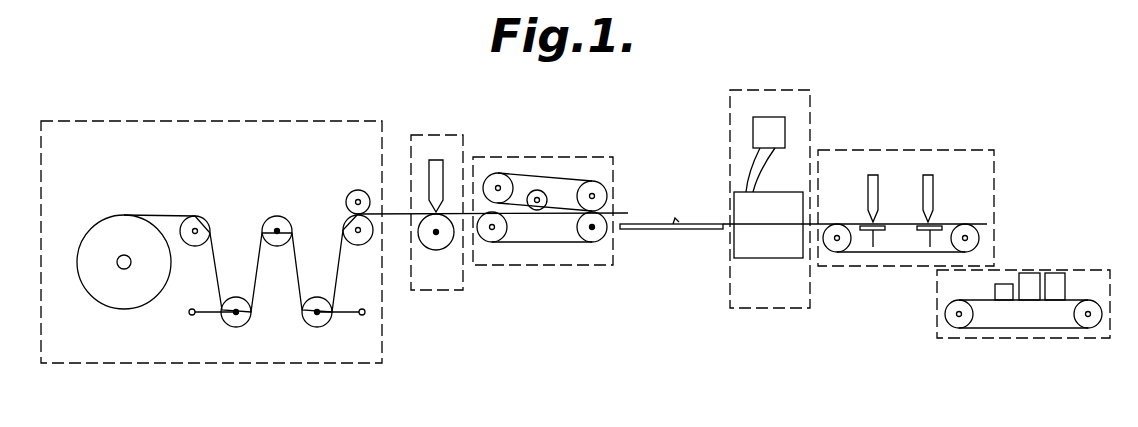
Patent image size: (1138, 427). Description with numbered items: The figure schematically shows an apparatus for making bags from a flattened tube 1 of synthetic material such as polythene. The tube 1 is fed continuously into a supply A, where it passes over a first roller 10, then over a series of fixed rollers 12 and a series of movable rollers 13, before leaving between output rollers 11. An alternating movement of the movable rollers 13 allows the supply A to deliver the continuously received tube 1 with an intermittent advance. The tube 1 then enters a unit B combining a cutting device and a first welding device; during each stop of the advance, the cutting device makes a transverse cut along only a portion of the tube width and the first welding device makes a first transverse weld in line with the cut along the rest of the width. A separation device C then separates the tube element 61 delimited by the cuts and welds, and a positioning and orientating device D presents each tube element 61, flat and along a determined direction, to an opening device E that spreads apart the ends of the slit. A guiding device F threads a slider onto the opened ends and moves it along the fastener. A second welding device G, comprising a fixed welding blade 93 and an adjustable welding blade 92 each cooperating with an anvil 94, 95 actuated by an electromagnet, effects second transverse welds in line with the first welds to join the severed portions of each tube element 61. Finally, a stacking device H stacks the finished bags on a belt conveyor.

The flattened tube 1 is at (180, 188).
The first roller 10 is at (95, 287).
The output rollers 11 is at (348, 203).
The fixed rollers 12 is at (208, 230).
The movable rollers 13 is at (250, 308).
The tube element 61 is at (673, 222).
The welding blade 92 is at (870, 190).
The welding blade 93 is at (934, 182).
The anvil 94 is at (868, 231).
The anvil 95 is at (922, 231).
The supply A is at (234, 119).
The cutting device and first welding device unit B is at (438, 134).
The separation device C is at (543, 156).
The positioning and orientating device D is at (678, 212).
The opening device E is at (762, 250).
The guiding device F is at (777, 89).
The second welding device G is at (899, 149).
The stacking device H is at (1042, 269).